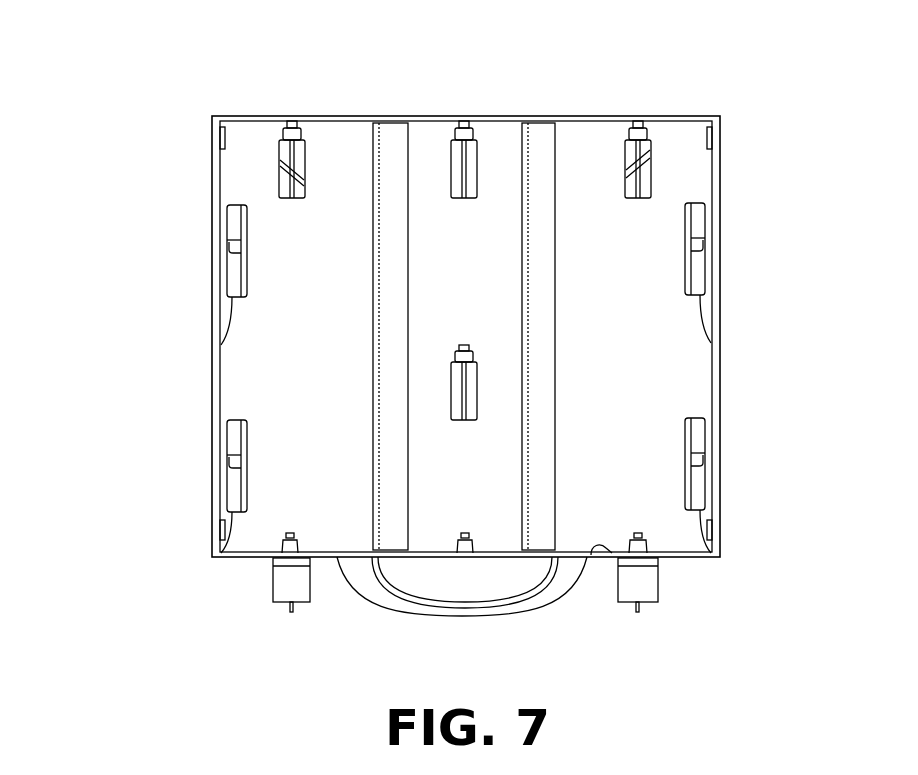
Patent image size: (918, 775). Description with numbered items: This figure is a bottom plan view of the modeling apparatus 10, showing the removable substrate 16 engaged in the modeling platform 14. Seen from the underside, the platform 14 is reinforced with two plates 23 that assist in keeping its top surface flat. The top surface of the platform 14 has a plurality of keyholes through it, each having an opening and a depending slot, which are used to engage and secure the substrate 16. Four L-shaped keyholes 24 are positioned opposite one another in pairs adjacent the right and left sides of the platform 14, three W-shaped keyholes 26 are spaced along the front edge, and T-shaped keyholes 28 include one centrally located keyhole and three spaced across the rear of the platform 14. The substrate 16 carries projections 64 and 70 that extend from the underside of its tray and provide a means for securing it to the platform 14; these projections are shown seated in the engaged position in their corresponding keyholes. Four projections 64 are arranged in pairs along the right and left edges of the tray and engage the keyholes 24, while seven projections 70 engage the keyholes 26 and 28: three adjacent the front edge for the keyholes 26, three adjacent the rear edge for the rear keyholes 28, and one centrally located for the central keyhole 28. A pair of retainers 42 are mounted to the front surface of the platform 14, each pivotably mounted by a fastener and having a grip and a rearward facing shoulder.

The modeling apparatus 10 is at (438, 328).
The modeling platform 14 is at (708, 184).
The removable substrate 16 is at (434, 622).
The plates 23 is at (383, 140).
The L-shaped keyholes 24 is at (224, 338).
The W-shaped keyholes 26 is at (305, 552).
The T-shaped keyholes 28 is at (288, 182).
The retainers 42 is at (283, 578).
The projections 64 is at (238, 225).
The projections 70 is at (289, 121).